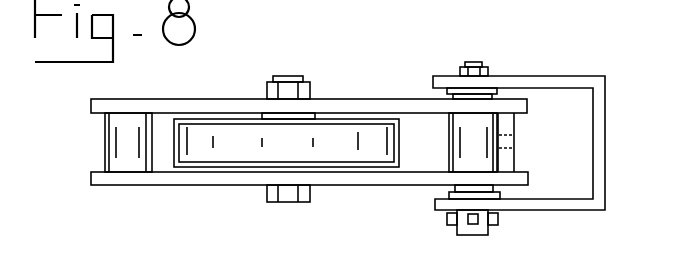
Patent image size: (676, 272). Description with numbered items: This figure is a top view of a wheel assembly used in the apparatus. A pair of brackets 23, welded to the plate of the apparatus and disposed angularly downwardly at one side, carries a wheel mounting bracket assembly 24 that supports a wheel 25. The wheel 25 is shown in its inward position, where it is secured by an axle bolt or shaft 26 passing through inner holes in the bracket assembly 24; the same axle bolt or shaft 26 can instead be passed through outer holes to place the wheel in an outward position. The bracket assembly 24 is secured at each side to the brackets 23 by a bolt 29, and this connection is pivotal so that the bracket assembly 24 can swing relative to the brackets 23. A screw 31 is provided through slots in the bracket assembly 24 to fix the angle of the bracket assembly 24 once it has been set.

The brackets 23 is at (541, 75).
The wheel mounting bracket assembly 24 is at (217, 98).
The wheel 25 is at (358, 117).
The axle bolt or shaft 26 is at (289, 205).
The bolt 29 is at (516, 127).
The screw 31 is at (455, 230).